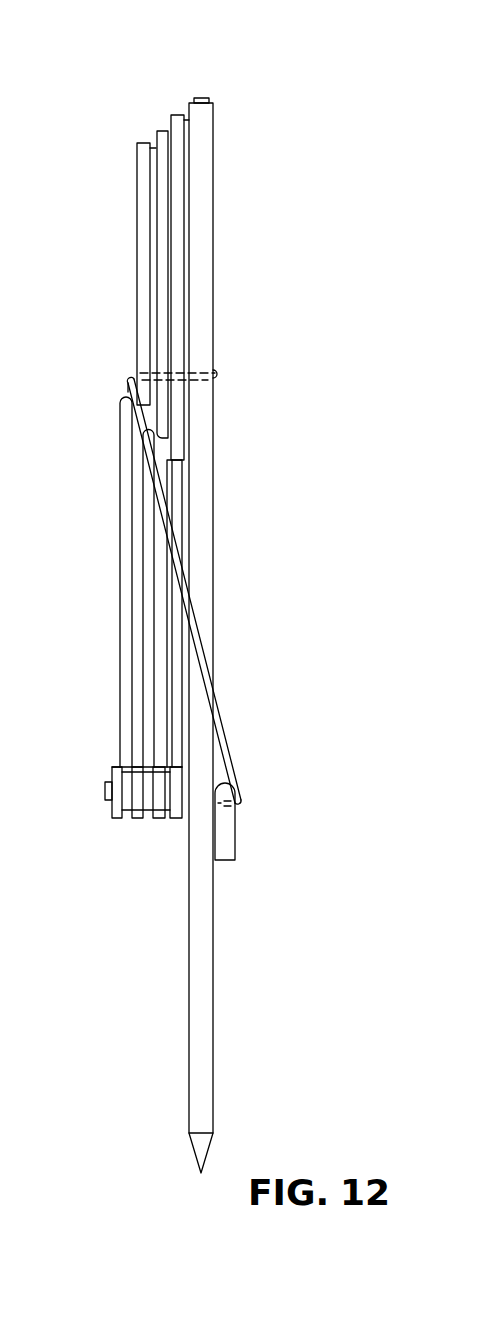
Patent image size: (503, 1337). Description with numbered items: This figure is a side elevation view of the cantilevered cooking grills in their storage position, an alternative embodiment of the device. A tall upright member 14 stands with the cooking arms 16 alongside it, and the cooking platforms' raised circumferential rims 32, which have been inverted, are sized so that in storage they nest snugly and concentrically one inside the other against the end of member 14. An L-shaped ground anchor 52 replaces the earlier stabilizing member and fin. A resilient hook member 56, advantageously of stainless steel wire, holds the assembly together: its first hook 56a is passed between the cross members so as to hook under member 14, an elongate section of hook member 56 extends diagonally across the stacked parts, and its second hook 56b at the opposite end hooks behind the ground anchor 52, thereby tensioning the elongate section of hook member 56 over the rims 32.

The member 14 is at (210, 242).
The raised circumferential rims 32 is at (147, 143).
The cooking arms 16 is at (123, 583).
The resilient hook member 56 is at (233, 584).
The first hook 56a is at (218, 368).
The second hook 56b is at (242, 805).
The L-shaped ground anchor 52 is at (237, 848).